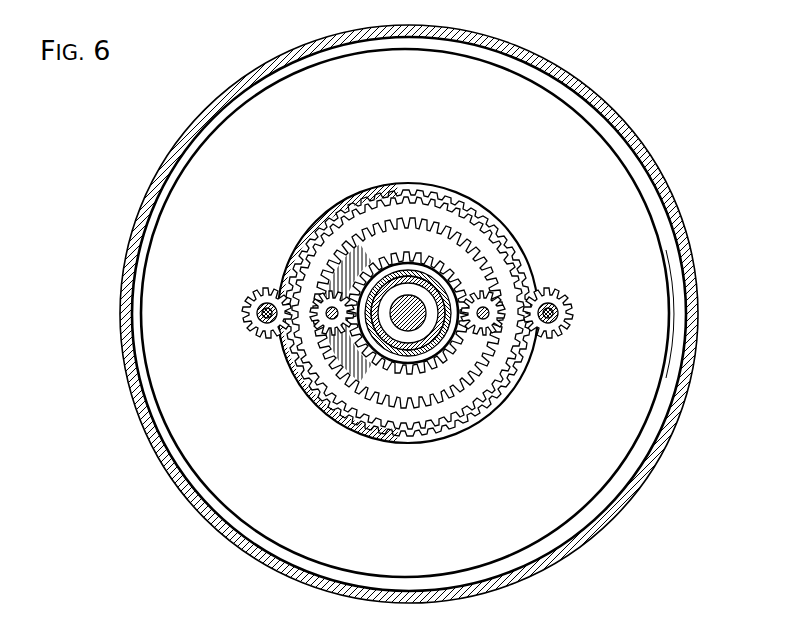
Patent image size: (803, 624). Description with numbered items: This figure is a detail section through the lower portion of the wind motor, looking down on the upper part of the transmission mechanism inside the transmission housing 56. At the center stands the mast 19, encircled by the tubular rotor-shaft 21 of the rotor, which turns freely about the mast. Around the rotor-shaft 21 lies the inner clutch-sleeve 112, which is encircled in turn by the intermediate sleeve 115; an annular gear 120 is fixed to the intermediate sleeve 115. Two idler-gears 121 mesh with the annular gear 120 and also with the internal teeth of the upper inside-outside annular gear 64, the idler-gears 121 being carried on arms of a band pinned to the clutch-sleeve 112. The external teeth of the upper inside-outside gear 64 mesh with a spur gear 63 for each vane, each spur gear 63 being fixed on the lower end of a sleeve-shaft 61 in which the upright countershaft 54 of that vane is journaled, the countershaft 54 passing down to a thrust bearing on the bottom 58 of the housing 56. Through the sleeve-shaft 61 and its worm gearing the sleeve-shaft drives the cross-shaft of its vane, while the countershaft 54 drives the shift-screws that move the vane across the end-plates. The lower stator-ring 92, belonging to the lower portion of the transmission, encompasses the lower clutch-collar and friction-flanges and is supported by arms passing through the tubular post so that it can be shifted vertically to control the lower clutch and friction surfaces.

The mast 19 is at (420, 323).
The tubular rotor-shaft 21 is at (432, 297).
The upright countershaft 54 is at (255, 305).
The transmission housing 56 is at (620, 113).
The bottom of transmission housing 58 is at (657, 291).
The sleeve-shaft 61 is at (267, 305).
The spur gear 63 is at (250, 322).
The upper inside-outside annular gear 64 is at (463, 225).
The lower stator-ring 92 is at (340, 417).
The inner clutch-sleeve 112 is at (422, 277).
The intermediate sleeve 115 is at (390, 257).
The annular gear 120 is at (402, 370).
The idler-gears 121 is at (328, 322).